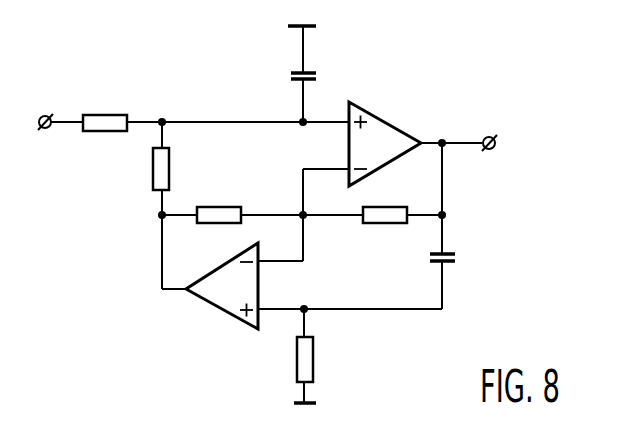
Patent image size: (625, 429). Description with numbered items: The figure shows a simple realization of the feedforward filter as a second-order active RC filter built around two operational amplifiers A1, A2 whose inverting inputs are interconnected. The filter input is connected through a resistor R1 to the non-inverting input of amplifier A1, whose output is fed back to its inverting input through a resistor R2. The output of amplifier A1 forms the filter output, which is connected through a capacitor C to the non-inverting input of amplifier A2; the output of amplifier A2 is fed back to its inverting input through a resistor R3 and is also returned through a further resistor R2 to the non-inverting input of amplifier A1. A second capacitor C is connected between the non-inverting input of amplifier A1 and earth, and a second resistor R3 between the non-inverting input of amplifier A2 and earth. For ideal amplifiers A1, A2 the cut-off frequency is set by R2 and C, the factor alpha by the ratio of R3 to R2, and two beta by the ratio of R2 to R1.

The resistor R1 is at (103, 122).
The resistor R2 is at (160, 169).
The resistor R3 is at (217, 217).
The capacitor C is at (290, 73).
The operational amplifier A1 is at (393, 123).
The operational amplifier A2 is at (216, 307).